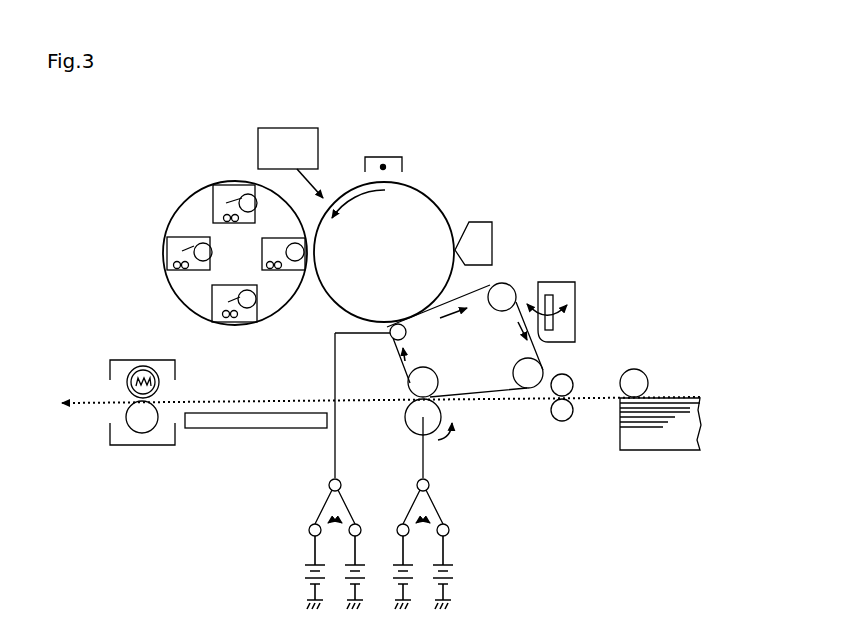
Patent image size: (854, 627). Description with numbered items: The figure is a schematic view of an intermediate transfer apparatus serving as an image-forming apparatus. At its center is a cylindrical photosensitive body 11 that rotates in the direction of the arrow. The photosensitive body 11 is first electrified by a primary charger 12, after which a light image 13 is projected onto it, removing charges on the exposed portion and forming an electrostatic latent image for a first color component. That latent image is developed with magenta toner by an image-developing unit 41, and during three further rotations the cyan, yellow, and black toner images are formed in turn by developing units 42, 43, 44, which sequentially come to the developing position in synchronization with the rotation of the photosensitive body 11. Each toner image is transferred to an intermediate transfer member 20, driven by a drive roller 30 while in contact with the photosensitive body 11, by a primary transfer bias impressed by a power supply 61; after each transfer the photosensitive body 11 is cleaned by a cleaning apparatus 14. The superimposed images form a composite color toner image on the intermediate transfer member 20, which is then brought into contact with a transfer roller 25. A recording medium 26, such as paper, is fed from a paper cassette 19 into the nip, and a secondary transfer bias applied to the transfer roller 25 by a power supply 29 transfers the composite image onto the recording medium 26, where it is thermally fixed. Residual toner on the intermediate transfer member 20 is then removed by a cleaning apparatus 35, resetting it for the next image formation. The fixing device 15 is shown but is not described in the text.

The photosensitive body 11 is at (432, 190).
The primary charger 12 is at (383, 157).
The light image 13 is at (327, 165).
The cleaning apparatus 14 is at (485, 222).
The fixing device 15 is at (128, 360).
The paper cassette 19 is at (658, 452).
The intermediate transfer member 20 is at (480, 288).
The transfer roller 25 is at (412, 433).
The recording medium 26 is at (673, 395).
The power supply 29 is at (457, 578).
The drive roller 30 is at (504, 295).
The cleaning apparatus 35 is at (575, 312).
The image-developing unit 41 is at (293, 268).
The developing unit 42 is at (225, 193).
The developing unit 43 is at (167, 242).
The developing unit 44 is at (243, 319).
The power supply 61 is at (300, 577).